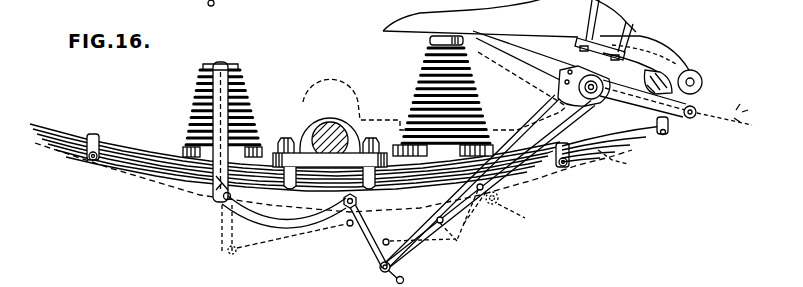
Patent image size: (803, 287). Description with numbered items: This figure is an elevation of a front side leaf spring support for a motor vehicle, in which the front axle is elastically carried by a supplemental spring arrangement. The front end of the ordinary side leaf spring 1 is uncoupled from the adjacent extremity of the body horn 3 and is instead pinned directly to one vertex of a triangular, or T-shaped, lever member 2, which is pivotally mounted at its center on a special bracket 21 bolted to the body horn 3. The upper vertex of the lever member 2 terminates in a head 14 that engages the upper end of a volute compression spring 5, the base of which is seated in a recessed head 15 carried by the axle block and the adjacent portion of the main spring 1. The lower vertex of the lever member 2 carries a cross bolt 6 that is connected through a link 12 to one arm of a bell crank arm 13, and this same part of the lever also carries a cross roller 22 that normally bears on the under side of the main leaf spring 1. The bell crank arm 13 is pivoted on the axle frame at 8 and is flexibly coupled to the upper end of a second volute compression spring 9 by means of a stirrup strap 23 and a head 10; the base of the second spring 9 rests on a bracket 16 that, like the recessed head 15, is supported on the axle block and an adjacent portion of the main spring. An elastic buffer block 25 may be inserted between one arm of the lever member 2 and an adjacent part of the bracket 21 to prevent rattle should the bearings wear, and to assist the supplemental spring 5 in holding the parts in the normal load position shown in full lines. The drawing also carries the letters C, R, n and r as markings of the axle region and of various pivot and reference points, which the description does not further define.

The side leaf spring 1 is at (603, 147).
The lever member 2 is at (541, 124).
The body horn 3 is at (746, 106).
The volute compression spring 5 is at (413, 88).
The cross bolt 6 is at (470, 226).
The pivot 8 is at (347, 224).
The second volute compression spring 9 is at (192, 101).
The head 10 is at (232, 68).
The link 12 is at (395, 269).
The bell crank arm 13 is at (293, 220).
The head 14 is at (430, 41).
The recessed head 15 is at (523, 173).
The bracket 16 is at (185, 148).
The bracket 21 is at (647, 52).
The cross roller 22 is at (500, 193).
The stirrup strap 23 is at (227, 173).
The elastic buffer block 25 is at (672, 73).
The axle C is at (420, 120).
The leaf spring R is at (328, 168).
The pivot n is at (380, 267).
The pivot point r is at (206, 10).